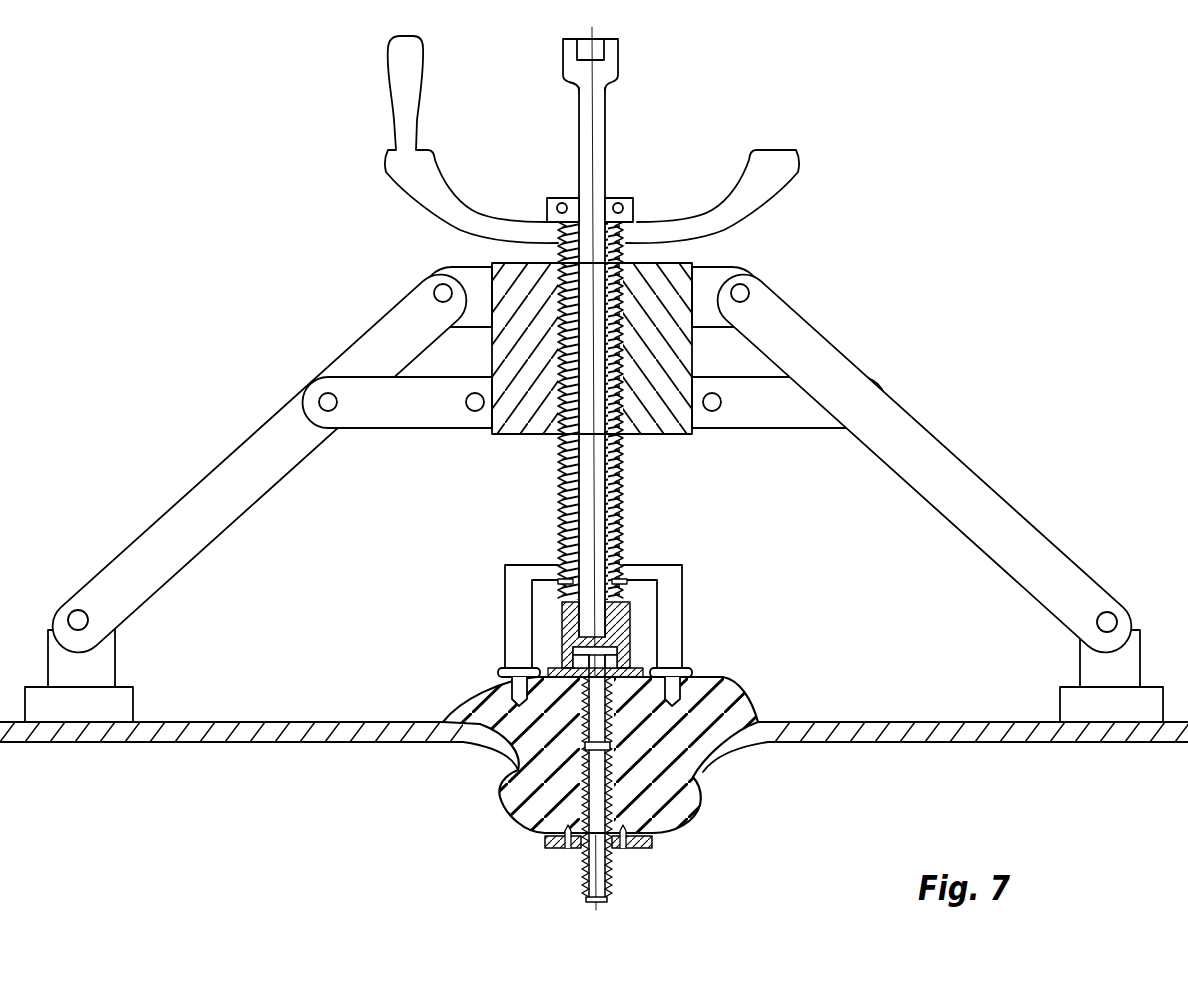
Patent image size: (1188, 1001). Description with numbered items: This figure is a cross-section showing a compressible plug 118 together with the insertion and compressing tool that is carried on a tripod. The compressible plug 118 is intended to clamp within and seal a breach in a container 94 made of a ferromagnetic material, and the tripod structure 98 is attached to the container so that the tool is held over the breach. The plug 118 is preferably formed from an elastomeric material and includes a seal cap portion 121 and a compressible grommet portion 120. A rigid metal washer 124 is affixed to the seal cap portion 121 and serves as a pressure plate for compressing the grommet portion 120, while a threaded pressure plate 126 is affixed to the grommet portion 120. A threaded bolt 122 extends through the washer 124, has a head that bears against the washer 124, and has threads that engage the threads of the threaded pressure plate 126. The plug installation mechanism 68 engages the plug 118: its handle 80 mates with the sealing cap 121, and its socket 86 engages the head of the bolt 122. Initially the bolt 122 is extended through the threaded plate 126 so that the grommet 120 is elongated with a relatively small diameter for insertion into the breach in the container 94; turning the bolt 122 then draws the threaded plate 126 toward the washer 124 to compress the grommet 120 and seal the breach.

The plug installation mechanism 68 is at (838, 267).
The tripod structure 98 is at (1029, 447).
The handle 80 is at (670, 575).
The socket 86 is at (622, 615).
The rigid metal washer 124 is at (617, 650).
The compressible plug 118 is at (760, 682).
The seal cap portion 121 is at (477, 698).
The compressible grommet portion 120 is at (690, 817).
The threaded bolt 122 is at (582, 882).
The threaded pressure plate 126 is at (642, 848).
The container 94 is at (907, 722).